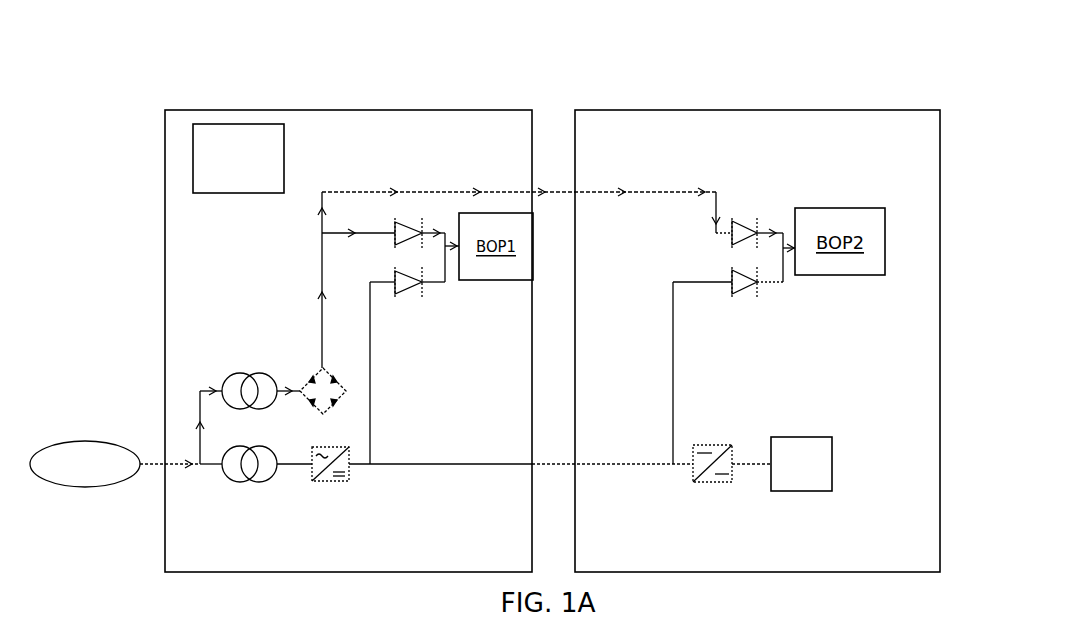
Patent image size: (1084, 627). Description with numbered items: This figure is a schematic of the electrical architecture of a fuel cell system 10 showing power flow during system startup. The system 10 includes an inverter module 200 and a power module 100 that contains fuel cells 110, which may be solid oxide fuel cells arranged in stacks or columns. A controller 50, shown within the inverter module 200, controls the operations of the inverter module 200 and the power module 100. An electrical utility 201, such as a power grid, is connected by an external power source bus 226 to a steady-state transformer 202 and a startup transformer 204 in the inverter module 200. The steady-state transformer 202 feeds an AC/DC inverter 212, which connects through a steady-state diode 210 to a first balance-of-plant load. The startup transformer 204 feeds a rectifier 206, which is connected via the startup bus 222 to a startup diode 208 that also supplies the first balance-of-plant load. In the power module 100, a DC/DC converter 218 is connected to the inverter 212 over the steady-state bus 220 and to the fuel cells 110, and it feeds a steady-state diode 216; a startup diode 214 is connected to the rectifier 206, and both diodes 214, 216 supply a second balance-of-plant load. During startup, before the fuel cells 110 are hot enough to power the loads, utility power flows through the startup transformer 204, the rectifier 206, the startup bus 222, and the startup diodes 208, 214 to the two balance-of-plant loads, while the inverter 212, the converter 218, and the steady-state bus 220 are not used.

The fuel cell system 10 is at (552, 78).
The controller 50 is at (238, 158).
The power module 100 is at (758, 111).
The fuel cells 110 is at (813, 491).
The inverter module 200 is at (288, 111).
The electrical utility 201 is at (97, 442).
The steady-state transformer 202 is at (249, 462).
The startup transformer 204 is at (235, 372).
The rectifier 206 is at (310, 372).
The startup diode 208 is at (400, 223).
The steady-state diode 210 is at (400, 290).
The AC/DC inverter 212 is at (327, 481).
The startup diode 214 is at (737, 218).
The steady-state diode 216 is at (742, 285).
The DC/DC converter 218 is at (710, 482).
The steady-state bus 220 is at (557, 463).
The startup bus 222 is at (319, 247).
The external power source bus 226 is at (198, 460).